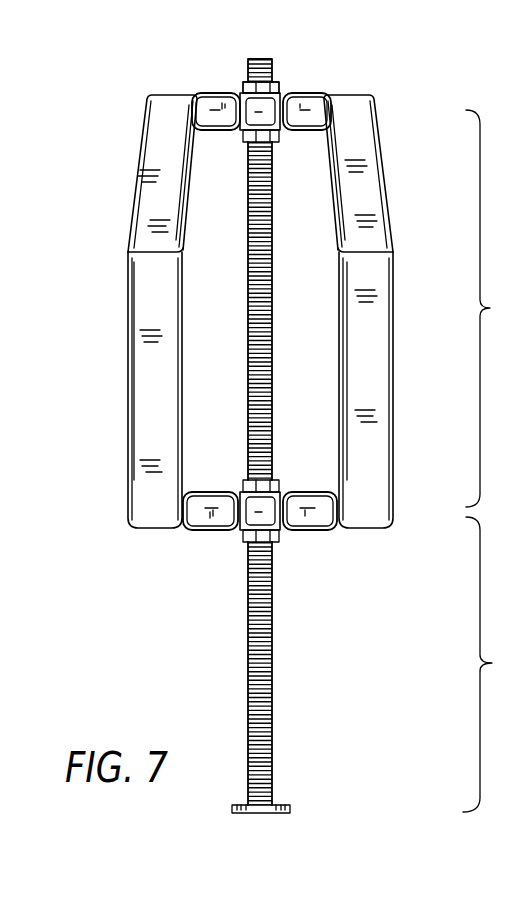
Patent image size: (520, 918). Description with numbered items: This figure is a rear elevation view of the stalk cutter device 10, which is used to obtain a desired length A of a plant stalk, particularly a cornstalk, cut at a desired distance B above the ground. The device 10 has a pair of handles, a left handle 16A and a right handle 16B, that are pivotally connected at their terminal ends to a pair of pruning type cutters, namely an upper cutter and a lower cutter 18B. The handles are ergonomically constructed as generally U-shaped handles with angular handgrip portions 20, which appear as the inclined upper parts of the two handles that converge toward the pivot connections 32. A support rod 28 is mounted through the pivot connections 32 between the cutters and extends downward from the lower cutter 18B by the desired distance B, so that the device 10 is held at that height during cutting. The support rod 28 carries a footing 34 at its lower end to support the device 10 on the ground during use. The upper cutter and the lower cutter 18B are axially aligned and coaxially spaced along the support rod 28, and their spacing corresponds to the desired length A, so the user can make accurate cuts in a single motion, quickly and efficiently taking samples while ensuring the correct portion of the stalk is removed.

The stalk cutter device 10 is at (420, 82).
The left handle 16A is at (150, 358).
The right handle 16B is at (372, 357).
The lower cutter 18B is at (222, 518).
The angular handgrip portions 20 is at (158, 170).
The support rod 28 is at (260, 62).
The pivot connections 32 is at (242, 132).
The footing 34 is at (280, 813).
The desired length A is at (491, 308).
The desired distance B is at (491, 664).